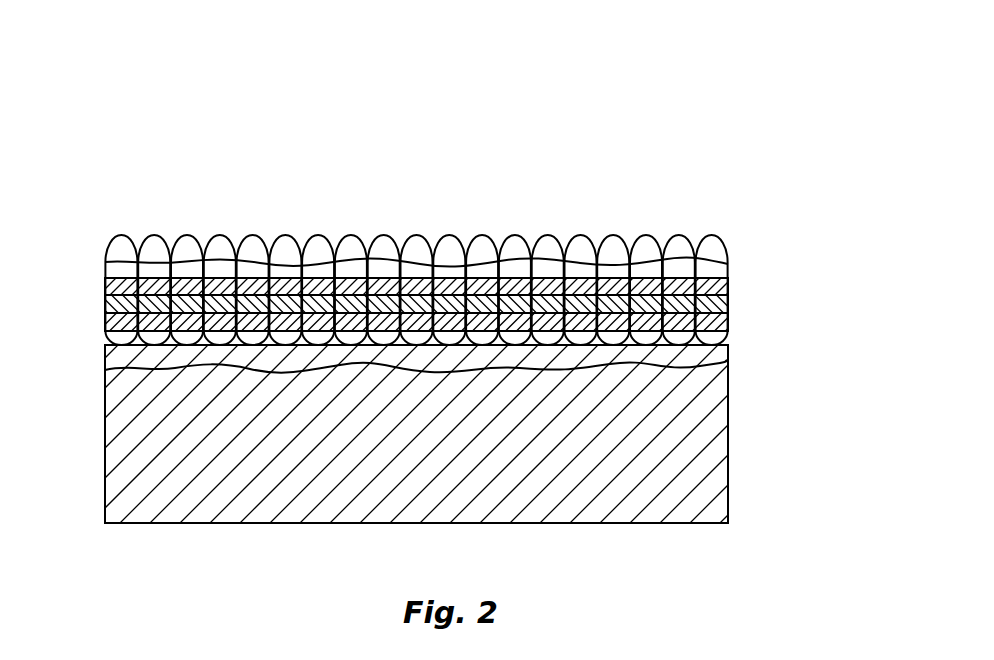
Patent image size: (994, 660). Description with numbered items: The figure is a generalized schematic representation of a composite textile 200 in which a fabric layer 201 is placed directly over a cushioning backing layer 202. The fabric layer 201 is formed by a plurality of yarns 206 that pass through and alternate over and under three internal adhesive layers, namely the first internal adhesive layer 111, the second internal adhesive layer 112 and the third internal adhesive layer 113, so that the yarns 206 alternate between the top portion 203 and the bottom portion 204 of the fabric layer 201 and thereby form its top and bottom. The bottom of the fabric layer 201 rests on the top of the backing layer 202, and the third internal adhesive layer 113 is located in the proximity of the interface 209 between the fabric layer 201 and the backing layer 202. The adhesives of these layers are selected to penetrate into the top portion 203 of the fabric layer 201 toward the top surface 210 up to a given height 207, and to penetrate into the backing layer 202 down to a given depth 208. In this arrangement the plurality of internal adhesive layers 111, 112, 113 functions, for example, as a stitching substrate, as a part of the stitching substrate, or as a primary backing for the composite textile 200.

The composite textile 200 is at (777, 174).
The fabric layer 201 is at (97, 236).
The backing layer 202 is at (105, 438).
The top portion 203 is at (103, 248).
The bottom portion 204 is at (97, 340).
The yarns 206 is at (418, 237).
The given height 207 is at (253, 258).
The given depth 208 is at (663, 373).
The interface 209 is at (567, 342).
The top surface 210 is at (318, 240).
The first internal adhesive layer 111 is at (728, 282).
The second internal adhesive layer 112 is at (728, 303).
The third internal adhesive layer 113 is at (728, 318).